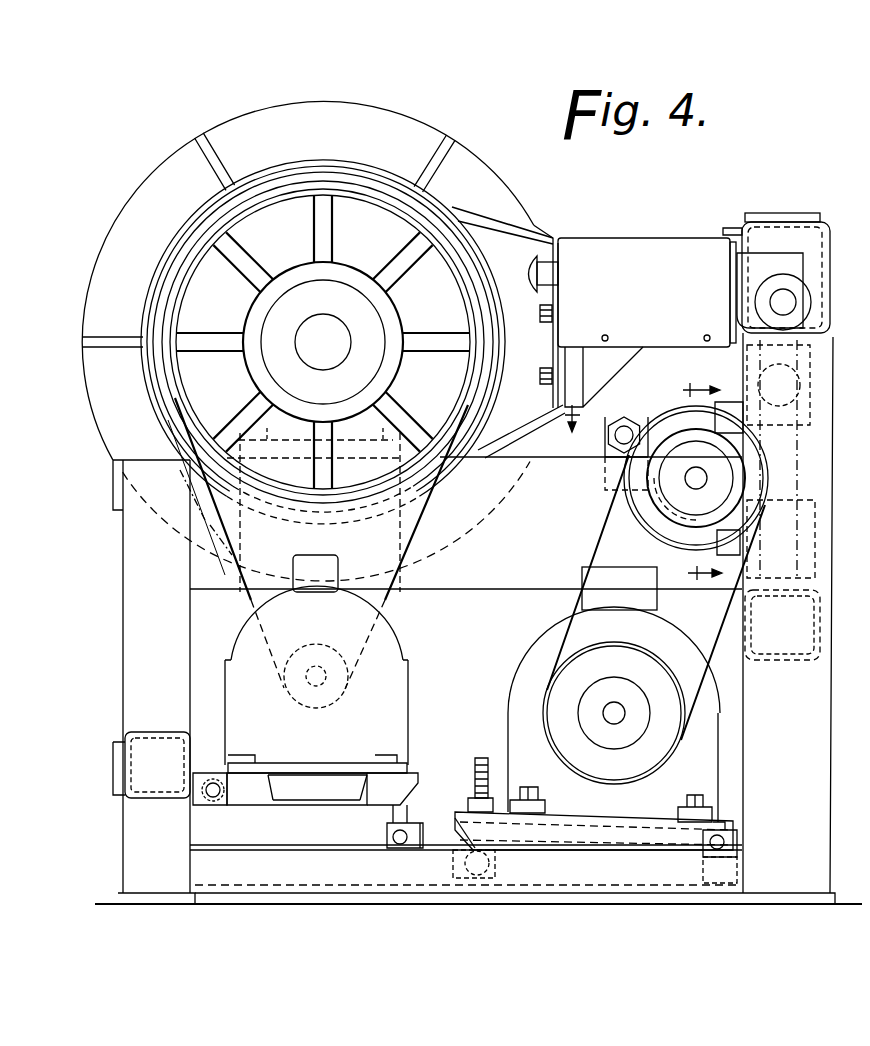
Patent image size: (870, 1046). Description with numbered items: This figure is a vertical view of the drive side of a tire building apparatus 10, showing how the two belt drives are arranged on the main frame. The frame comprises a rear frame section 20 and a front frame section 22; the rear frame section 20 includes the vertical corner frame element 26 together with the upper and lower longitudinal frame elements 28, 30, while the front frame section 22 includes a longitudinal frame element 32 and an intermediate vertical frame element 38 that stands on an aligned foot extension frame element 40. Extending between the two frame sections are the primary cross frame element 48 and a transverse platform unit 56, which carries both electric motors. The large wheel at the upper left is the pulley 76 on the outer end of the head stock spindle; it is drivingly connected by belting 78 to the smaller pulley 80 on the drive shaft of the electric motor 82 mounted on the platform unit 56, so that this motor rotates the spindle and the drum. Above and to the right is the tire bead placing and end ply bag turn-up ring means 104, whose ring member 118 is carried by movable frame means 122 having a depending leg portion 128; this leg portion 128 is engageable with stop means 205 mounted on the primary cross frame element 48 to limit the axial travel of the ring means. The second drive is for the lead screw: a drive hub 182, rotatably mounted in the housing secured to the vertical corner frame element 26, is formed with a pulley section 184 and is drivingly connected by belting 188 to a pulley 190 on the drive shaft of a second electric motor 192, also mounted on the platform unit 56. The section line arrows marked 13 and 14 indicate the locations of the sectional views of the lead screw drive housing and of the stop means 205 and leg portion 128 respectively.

The machine 10 is at (846, 100).
The rear frame section 20 is at (833, 248).
The front frame section 22 is at (120, 684).
The vertical corner frame element 26 is at (800, 677).
The upper longitudinal frame element 28 is at (825, 271).
The lower longitudinal frame element 30 is at (818, 638).
The longitudinal frame element 32 is at (140, 756).
The intermediate vertical frame element 38 is at (126, 643).
The foot extension frame element 40 is at (126, 828).
The primary cross frame element 48 is at (497, 580).
The transverse platform unit 56 is at (298, 878).
The pulley 76 is at (343, 495).
The belting 78 is at (400, 588).
The pulley 80 is at (336, 623).
The electric motor 82 is at (388, 680).
The tire bead placing and end ply bag turn-up ring means 104 is at (258, 104).
The tire bead placing and end ply bag turn-up ring member 118 is at (355, 112).
The movable frame means 122 is at (660, 238).
The depending leg portion 128 is at (664, 348).
The drive hub 182 is at (678, 528).
The pulley section 184 is at (670, 410).
The belting 188 is at (600, 536).
The pulley 190 is at (637, 660).
The electric motor 192 is at (526, 656).
The stop means 205 is at (618, 420).
The section line 13 is at (703, 494).
The section line 14 is at (567, 433).